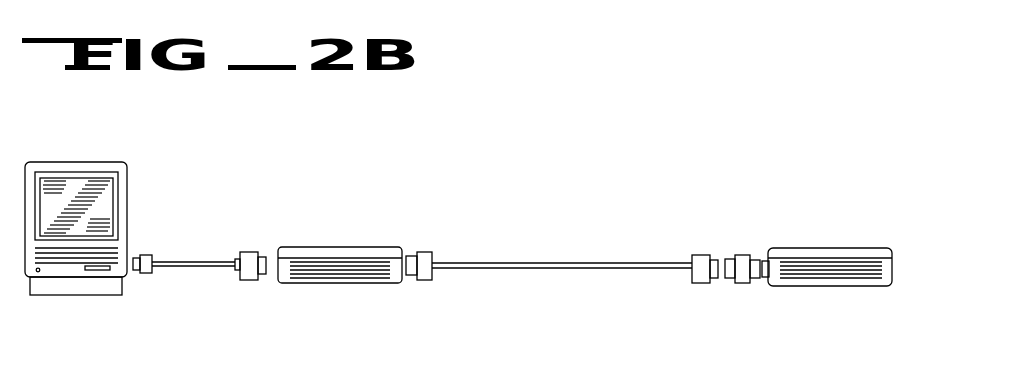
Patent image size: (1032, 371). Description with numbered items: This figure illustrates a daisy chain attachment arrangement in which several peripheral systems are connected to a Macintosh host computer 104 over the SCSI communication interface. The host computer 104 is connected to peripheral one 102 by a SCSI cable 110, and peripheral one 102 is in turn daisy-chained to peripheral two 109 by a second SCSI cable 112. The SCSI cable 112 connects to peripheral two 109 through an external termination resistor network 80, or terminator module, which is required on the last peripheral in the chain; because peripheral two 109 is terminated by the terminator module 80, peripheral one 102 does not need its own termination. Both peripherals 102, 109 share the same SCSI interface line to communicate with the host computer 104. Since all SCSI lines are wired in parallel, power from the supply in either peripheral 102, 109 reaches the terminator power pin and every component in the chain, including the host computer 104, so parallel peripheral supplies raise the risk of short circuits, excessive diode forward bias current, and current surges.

The host computer 104 is at (82, 295).
The SCSI cable 110 is at (205, 269).
The peripheral one 102 is at (347, 284).
The SCSI cable 112 is at (565, 272).
The termination resistor network 80 is at (743, 286).
The peripheral two 109 is at (838, 288).